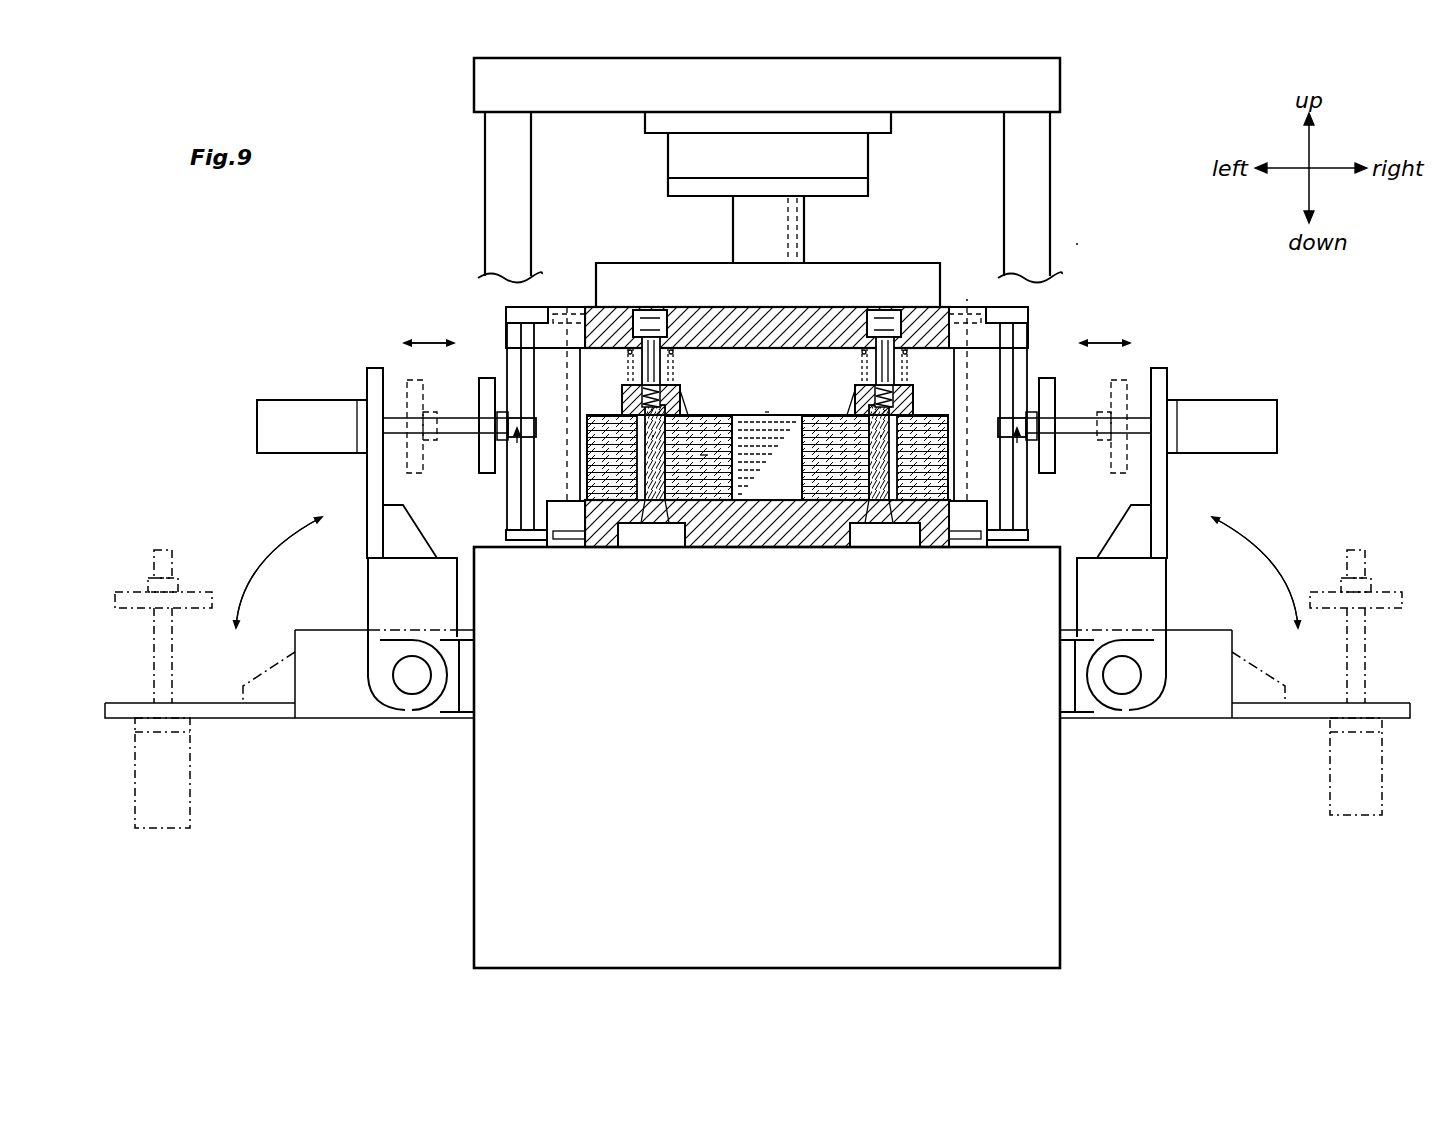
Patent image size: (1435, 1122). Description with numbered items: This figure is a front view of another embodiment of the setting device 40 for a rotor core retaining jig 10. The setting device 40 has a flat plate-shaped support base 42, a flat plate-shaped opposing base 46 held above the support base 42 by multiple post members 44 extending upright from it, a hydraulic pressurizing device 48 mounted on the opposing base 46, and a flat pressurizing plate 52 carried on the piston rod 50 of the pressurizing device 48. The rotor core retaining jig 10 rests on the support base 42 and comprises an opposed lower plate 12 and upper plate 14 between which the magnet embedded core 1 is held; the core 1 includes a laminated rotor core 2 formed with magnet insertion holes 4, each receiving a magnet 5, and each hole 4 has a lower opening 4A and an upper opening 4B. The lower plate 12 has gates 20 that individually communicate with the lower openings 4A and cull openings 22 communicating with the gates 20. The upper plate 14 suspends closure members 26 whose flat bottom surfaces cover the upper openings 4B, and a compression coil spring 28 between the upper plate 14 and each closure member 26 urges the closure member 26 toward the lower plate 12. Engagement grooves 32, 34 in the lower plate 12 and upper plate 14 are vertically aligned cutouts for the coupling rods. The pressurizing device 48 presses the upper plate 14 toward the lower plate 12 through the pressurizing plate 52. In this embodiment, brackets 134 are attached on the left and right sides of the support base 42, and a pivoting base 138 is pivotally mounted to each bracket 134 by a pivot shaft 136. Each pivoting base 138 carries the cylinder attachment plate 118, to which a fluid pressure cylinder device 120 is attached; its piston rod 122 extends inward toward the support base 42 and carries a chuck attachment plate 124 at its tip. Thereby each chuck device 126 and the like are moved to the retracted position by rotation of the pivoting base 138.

The magnet embedded core 1 is at (768, 409).
The rotor core 2 is at (820, 415).
The magnet insertion hole 4 is at (899, 470).
The lower opening 4A is at (708, 484).
The upper opening 4B is at (682, 400).
The magnet 5 is at (881, 438).
The rotor core retaining jig 10 is at (970, 292).
The lower plate 12 is at (777, 550).
The upper plate 14 is at (833, 320).
The gate 20 is at (895, 527).
The cull opening 22 is at (856, 548).
The closure member 26 is at (910, 395).
The compression coil spring 28 is at (905, 332).
The engagement groove 32 is at (981, 550).
The engagement groove 34 is at (1026, 342).
The setting device 40 is at (1079, 240).
The support base 42 is at (1040, 838).
The post member 44 is at (1075, 168).
The opposing base 46 is at (1060, 78).
The hydraulic pressurizing device 48 is at (862, 152).
The piston rod 50 is at (806, 212).
The pressurizing plate 52 is at (645, 288).
The cylinder attachment plate 118 is at (1156, 368).
The fluid pressure cylinder device 120 is at (1234, 408).
The piston rod 122 is at (1083, 432).
The chuck attachment plate 124 is at (1046, 390).
The chuck device 126 is at (1016, 445).
The bracket 134 is at (1081, 705).
The pivot shaft 136 is at (1128, 679).
The pivoting base 138 is at (1156, 580).